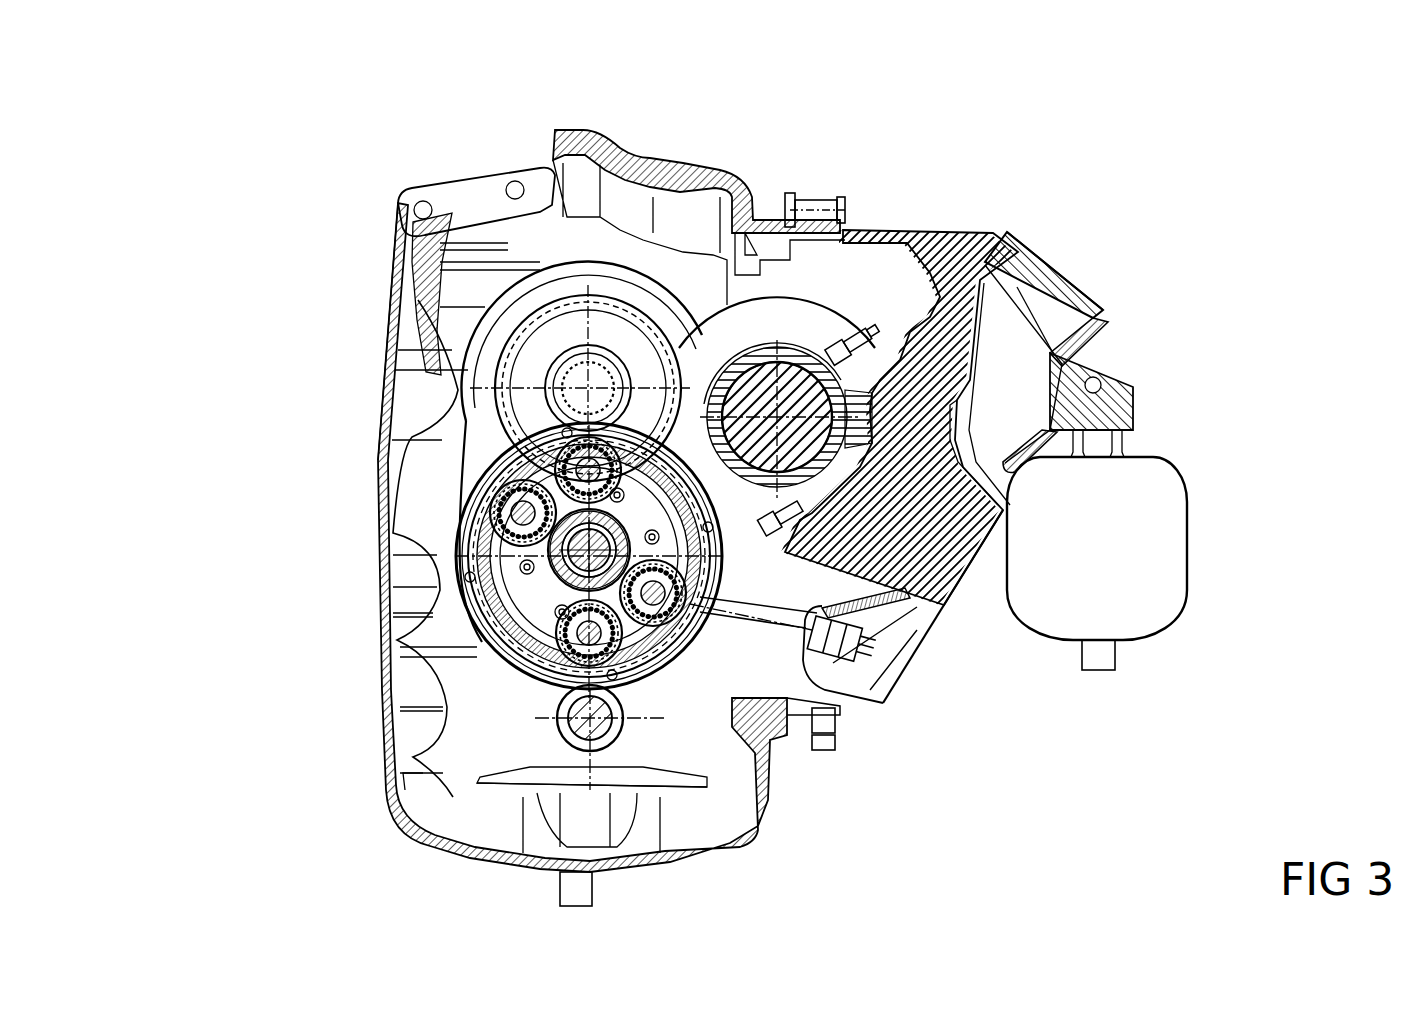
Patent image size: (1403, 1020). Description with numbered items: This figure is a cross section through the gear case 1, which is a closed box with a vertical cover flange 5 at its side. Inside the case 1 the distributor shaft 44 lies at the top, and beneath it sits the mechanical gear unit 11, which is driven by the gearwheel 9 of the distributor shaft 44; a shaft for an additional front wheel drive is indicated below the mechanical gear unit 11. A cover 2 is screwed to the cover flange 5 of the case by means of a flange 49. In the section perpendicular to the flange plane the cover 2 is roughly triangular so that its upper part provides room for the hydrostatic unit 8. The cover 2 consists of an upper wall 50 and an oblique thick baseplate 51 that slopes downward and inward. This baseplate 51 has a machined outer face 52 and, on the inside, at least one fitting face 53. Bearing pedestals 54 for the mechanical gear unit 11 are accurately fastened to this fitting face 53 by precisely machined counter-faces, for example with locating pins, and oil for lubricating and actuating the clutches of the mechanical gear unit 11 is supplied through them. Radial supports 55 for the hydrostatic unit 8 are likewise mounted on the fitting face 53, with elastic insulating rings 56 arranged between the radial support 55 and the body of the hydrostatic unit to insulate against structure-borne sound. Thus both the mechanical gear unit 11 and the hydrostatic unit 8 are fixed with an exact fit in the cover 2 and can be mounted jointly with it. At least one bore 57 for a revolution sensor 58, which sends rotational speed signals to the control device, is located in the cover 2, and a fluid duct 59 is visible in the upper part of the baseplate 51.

The gear case 1 is at (297, 158).
The cover 2 is at (1067, 258).
The cover flange 5 is at (772, 742).
The hydrostatic unit 8 is at (845, 342).
The gearwheel 9 is at (490, 398).
The mechanical gear unit 11 is at (468, 480).
The distributor shaft 44 is at (575, 376).
The flange 49 is at (835, 745).
The upper wall 50 is at (993, 233).
The baseplate 51 is at (943, 537).
The machined outer face 52 is at (917, 653).
The fitting face 53 is at (710, 624).
The bearing pedestals 54 is at (487, 548).
The radial supports 55 is at (843, 340).
The elastic insulating rings 56 is at (792, 372).
The bore 57 is at (575, 712).
The revolution sensor 58 is at (690, 641).
The fluid duct 59 is at (1000, 402).